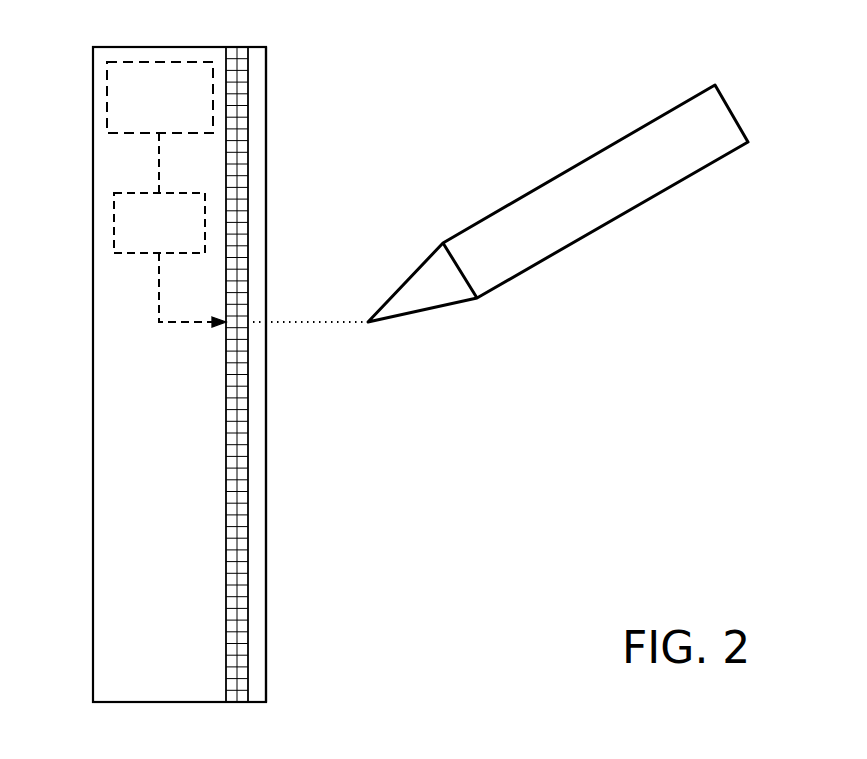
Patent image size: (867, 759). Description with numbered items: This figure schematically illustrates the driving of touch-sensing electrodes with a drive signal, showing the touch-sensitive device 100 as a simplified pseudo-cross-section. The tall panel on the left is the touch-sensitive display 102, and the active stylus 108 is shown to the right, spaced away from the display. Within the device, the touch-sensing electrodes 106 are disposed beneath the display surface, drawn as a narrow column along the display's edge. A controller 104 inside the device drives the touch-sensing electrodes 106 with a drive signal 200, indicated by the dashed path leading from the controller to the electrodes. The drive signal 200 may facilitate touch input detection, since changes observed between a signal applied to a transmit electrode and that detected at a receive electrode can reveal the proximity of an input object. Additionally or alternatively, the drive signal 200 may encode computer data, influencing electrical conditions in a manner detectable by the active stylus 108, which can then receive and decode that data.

The touch-sensitive device 100 is at (118, 46).
The touch-sensitive display 102 is at (266, 176).
The controller 104 is at (160, 97).
The touch-sensing electrodes 106 is at (237, 45).
The active stylus 108 is at (488, 215).
The drive signal 200 is at (145, 253).